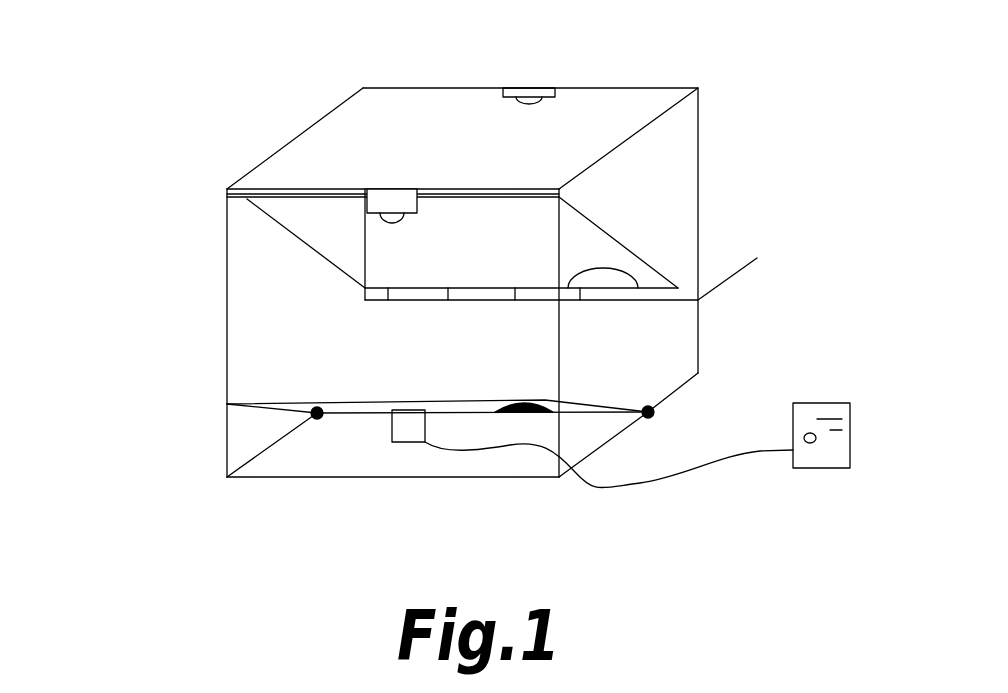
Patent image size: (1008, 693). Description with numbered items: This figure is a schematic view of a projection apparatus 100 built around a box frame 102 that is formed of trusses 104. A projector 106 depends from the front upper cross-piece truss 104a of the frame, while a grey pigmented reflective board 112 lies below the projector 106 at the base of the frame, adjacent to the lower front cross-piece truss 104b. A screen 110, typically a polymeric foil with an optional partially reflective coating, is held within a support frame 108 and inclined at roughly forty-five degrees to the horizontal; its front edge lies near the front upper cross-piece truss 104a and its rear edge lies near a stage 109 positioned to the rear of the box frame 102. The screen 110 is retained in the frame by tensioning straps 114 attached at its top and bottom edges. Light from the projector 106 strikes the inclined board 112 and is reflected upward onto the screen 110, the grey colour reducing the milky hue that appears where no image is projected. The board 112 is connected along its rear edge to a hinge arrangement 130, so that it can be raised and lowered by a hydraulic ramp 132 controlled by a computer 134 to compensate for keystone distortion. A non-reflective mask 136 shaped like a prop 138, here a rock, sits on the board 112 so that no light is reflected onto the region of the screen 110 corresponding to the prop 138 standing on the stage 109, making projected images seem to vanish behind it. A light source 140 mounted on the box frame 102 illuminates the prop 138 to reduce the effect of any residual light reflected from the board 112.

The projection apparatus 100 is at (198, 245).
The box frame 102 is at (698, 247).
The trusses 104 is at (207, 343).
The front upper cross-piece truss 104a is at (315, 189).
The lower front cross-piece truss 104b is at (263, 478).
The projector 106 is at (383, 189).
The support frame 108 is at (245, 198).
The stage 109 is at (712, 277).
The screen 110 is at (335, 223).
The grey pigmented reflective board 112 is at (290, 413).
The tensioning straps 114 is at (365, 297).
The hinge arrangement 130 is at (652, 414).
The hydraulic ramp 132 is at (398, 437).
The computer 134 is at (842, 448).
The non-reflective mask 136 is at (527, 412).
The prop 138 is at (603, 268).
The light source 140 is at (516, 87).